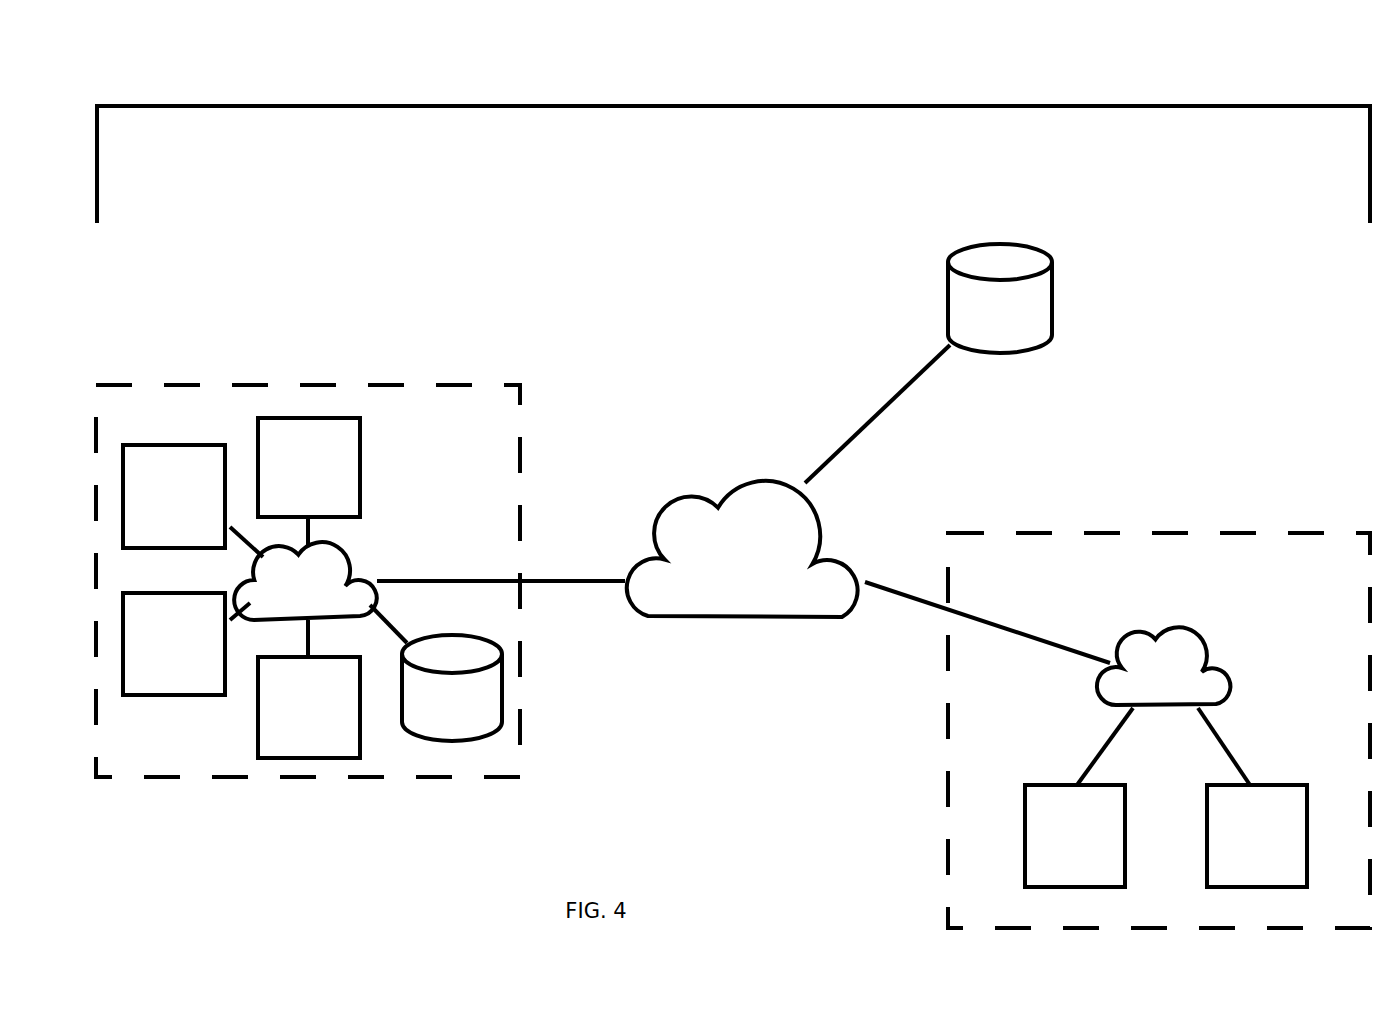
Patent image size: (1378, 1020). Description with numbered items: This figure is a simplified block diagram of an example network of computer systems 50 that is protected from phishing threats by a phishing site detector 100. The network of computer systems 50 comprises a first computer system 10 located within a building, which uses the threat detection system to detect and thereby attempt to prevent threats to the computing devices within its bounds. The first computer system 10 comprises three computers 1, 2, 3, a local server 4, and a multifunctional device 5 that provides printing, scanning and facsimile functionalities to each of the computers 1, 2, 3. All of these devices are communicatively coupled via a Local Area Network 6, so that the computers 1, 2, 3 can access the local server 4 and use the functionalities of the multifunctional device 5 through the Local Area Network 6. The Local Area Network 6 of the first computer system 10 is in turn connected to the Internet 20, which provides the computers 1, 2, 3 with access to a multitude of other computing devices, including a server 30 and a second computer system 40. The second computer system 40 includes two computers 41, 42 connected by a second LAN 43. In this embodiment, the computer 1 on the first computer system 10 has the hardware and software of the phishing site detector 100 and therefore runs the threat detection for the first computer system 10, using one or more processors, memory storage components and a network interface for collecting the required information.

The network of computer systems 50 is at (735, 106).
The first computer system 10 is at (308, 581).
The phishing site detector 100 is at (392, 467).
The computer 1 is at (309, 467).
The computer 2 is at (174, 644).
The computer 3 is at (309, 707).
The local server 4 is at (452, 688).
The multifunctional device 5 is at (174, 496).
The Local Area Network 6 is at (305, 581).
The Internet 20 is at (742, 549).
The server 30 is at (1000, 298).
The second computer system 40 is at (1159, 730).
The computer 41 is at (1075, 836).
The computer 42 is at (1257, 836).
The second LAN 43 is at (1163, 666).